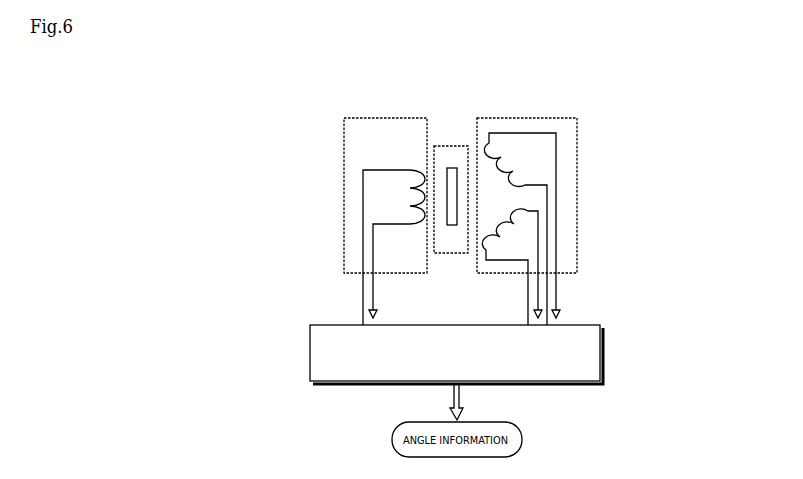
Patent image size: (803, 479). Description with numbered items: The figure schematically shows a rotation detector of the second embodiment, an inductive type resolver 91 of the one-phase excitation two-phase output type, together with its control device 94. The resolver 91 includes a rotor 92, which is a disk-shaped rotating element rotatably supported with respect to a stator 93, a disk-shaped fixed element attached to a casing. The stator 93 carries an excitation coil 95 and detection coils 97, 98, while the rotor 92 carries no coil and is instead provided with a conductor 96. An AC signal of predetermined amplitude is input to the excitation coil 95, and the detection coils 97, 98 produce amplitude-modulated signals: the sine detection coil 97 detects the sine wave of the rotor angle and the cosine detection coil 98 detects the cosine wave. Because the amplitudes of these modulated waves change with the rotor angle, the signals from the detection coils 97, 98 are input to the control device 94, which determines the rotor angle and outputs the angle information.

The resolver 91 is at (598, 113).
The rotor 92 is at (445, 146).
The stator 93 is at (384, 118).
The control device 94 is at (605, 352).
The excitation coil 95 is at (417, 168).
The conductor 96 is at (452, 225).
The sine detection coil 97 is at (487, 252).
The cosine detection coil 98 is at (487, 140).